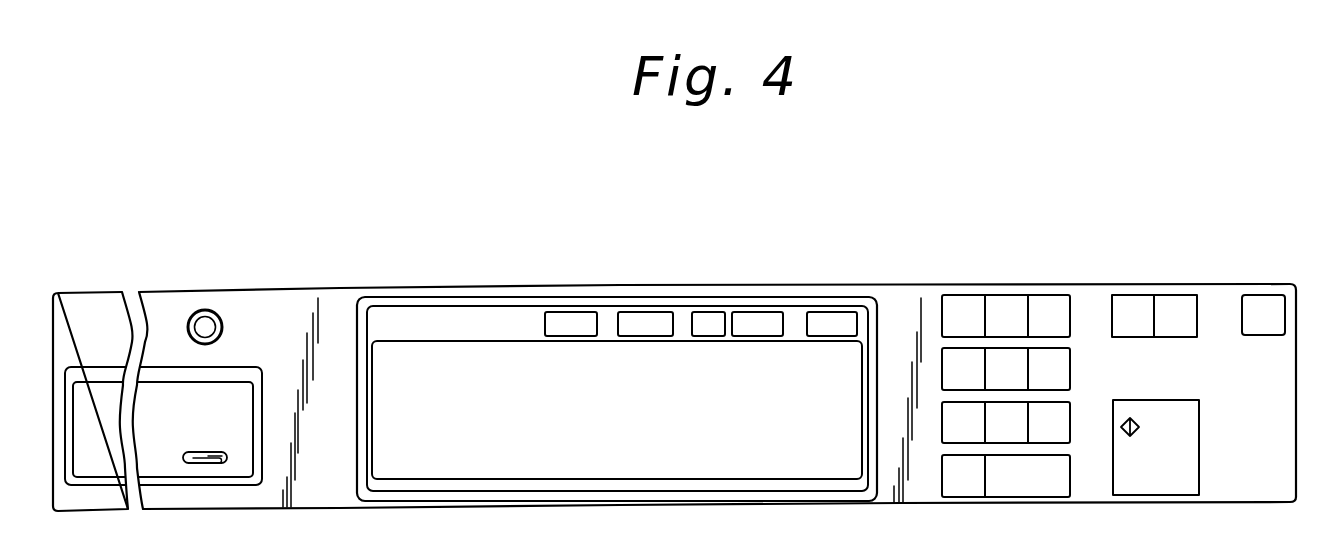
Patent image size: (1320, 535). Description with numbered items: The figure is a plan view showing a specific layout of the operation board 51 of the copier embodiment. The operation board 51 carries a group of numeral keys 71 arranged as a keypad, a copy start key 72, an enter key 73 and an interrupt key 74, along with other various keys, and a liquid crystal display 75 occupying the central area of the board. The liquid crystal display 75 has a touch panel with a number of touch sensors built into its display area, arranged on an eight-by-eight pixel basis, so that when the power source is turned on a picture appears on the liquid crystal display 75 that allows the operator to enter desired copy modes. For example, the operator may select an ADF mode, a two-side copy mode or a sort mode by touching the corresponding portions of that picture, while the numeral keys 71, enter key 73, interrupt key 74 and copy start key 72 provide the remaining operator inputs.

The operation board 51 is at (740, 238).
The liquid crystal display 75 is at (463, 352).
The numeral keys 71 is at (937, 334).
The start key 72 is at (1183, 433).
The enter key 73 is at (1130, 310).
The interrupt key 74 is at (1177, 310).